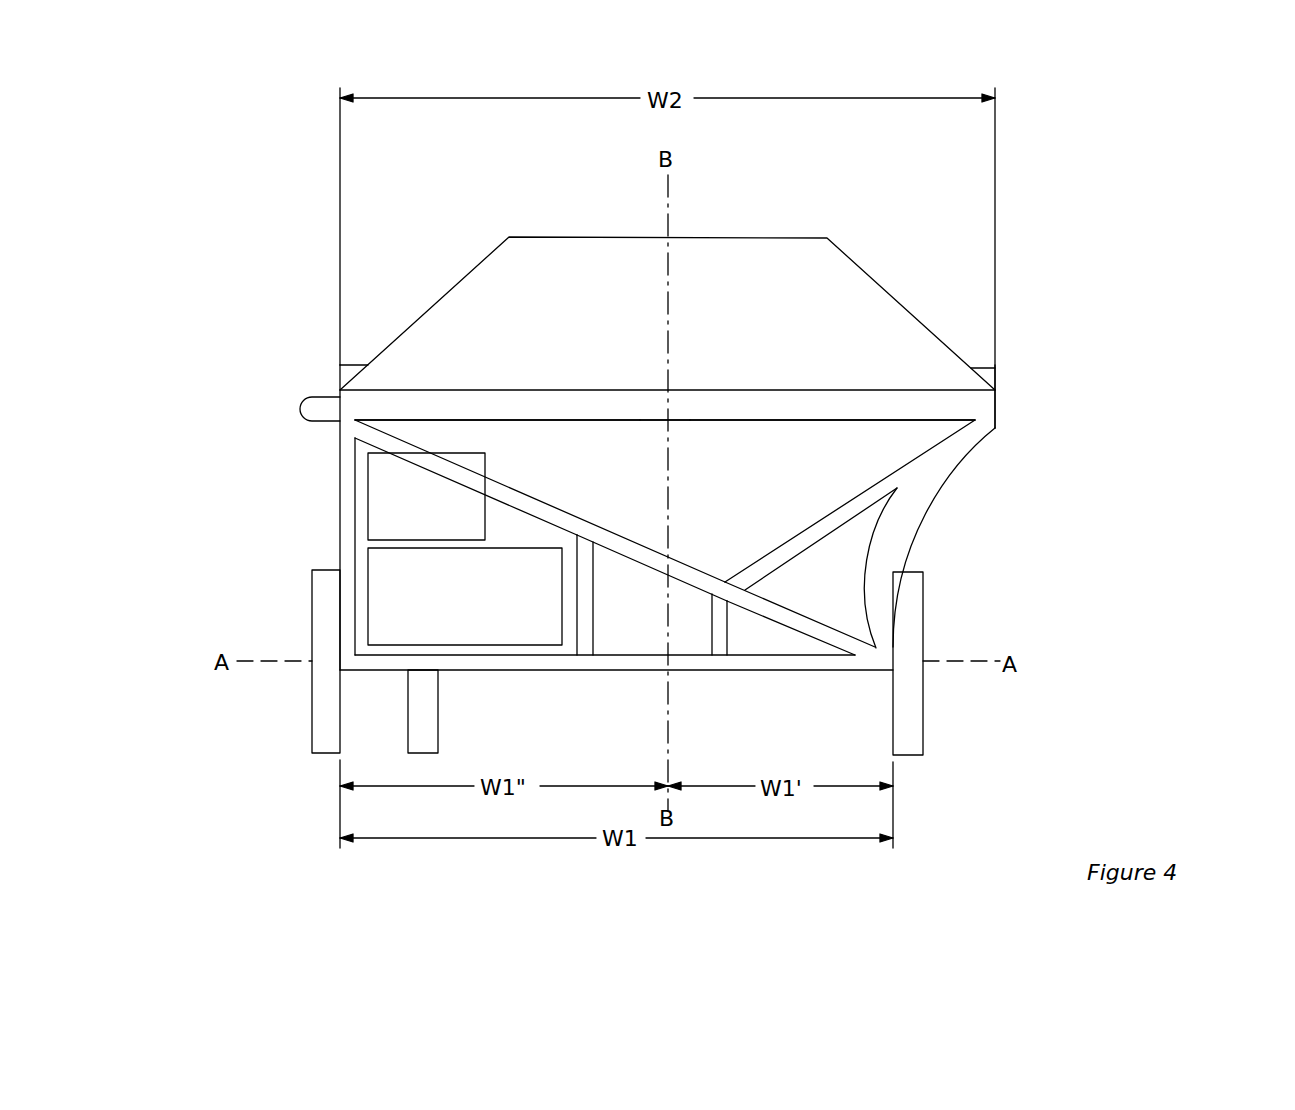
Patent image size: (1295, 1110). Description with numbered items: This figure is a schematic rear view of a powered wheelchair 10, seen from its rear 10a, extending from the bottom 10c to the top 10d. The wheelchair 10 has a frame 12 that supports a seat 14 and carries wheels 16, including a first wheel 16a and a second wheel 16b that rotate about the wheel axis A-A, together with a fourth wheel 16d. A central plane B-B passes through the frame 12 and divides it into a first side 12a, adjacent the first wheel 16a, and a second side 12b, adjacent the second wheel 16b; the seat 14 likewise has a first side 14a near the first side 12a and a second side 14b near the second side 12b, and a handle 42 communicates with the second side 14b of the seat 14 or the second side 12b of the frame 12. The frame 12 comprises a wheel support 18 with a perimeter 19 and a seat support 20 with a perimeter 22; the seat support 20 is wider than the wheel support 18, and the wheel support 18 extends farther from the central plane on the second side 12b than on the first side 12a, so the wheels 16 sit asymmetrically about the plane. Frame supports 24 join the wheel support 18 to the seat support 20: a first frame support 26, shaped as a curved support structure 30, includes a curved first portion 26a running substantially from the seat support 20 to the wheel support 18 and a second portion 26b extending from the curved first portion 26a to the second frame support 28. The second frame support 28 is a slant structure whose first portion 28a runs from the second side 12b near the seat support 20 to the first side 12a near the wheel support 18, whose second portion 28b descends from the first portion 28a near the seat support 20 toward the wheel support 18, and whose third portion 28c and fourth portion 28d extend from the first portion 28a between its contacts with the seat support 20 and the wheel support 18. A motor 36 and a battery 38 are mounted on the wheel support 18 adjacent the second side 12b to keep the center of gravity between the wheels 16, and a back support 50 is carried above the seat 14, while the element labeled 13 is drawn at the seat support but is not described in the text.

The wheelchair 10 is at (1140, 95).
The rear of the wheelchair 10a is at (237, 536).
The bottom of the wheelchair 10c is at (728, 697).
The top of the wheelchair 10d is at (852, 175).
The frame 12 is at (340, 466).
The first side of the frame 12a is at (745, 420).
The second side of the frame 12b is at (584, 420).
The mounting plate top 13 is at (997, 378).
The seat 14 is at (986, 366).
The first side of the seat 14a is at (990, 368).
The second side of the seat 14b is at (340, 380).
The wheels 16 is at (617, 662).
The first wheel 16a is at (910, 733).
The second wheel 16b is at (318, 603).
The fourth wheel 16d is at (428, 731).
The wheel support 18 is at (564, 670).
The perimeter of the wheel support 19 is at (343, 658).
The seat support 20 is at (648, 420).
The perimeter of the seat support 22 is at (997, 410).
The frame supports 24 is at (848, 468).
The first frame support 26 is at (895, 534).
The first portion of the first frame support 26a is at (905, 512).
The second portion of the first frame support 26b is at (843, 508).
The second frame support 28 is at (615, 537).
The first portion of the second frame support 28a is at (548, 502).
The second portion of the second frame support 28b is at (340, 511).
The third portion of the second frame support 28c is at (603, 563).
The fourth portion of the second frame support 28d is at (738, 626).
The curved support structure 30 is at (980, 460).
The motor 36 is at (538, 548).
The battery 38 is at (476, 453).
The handle 42 is at (306, 400).
The back support 50 is at (482, 260).